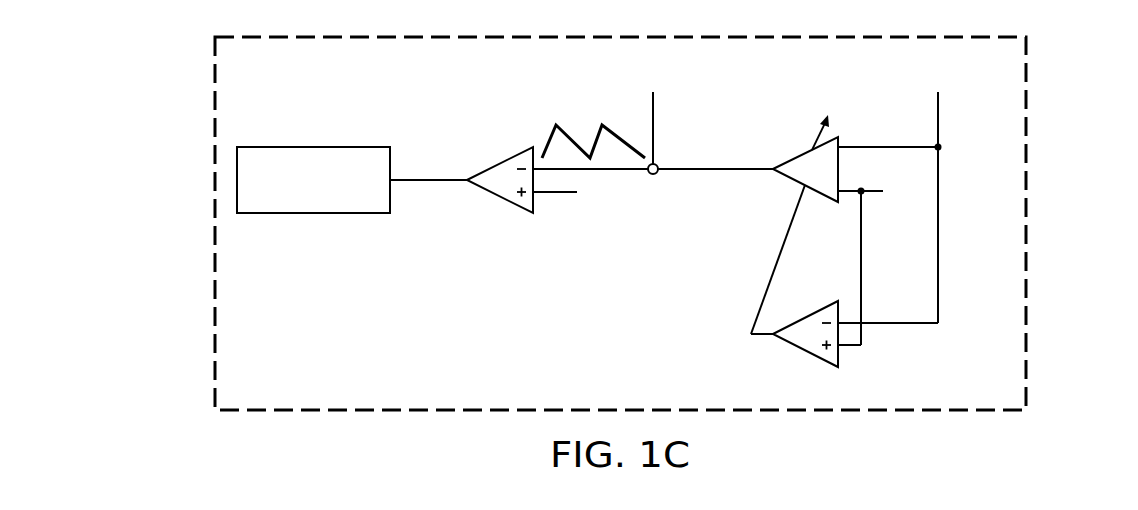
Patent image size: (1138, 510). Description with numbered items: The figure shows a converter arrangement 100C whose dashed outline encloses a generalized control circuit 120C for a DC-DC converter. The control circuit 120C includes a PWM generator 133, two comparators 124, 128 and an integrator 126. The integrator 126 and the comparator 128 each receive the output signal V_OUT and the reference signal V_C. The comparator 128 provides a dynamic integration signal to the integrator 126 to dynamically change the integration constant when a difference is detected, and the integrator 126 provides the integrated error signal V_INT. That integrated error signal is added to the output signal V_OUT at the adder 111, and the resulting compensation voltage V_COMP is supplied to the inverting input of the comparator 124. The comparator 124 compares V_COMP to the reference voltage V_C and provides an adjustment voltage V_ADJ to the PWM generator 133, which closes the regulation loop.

The power converter system 100C is at (148, 166).
The control circuit 120C is at (513, 328).
The PWM generator 133 is at (313, 146).
The comparator 124 is at (502, 197).
The adder 111 is at (657, 173).
The integrator 126 is at (786, 182).
The comparator 128 is at (805, 352).